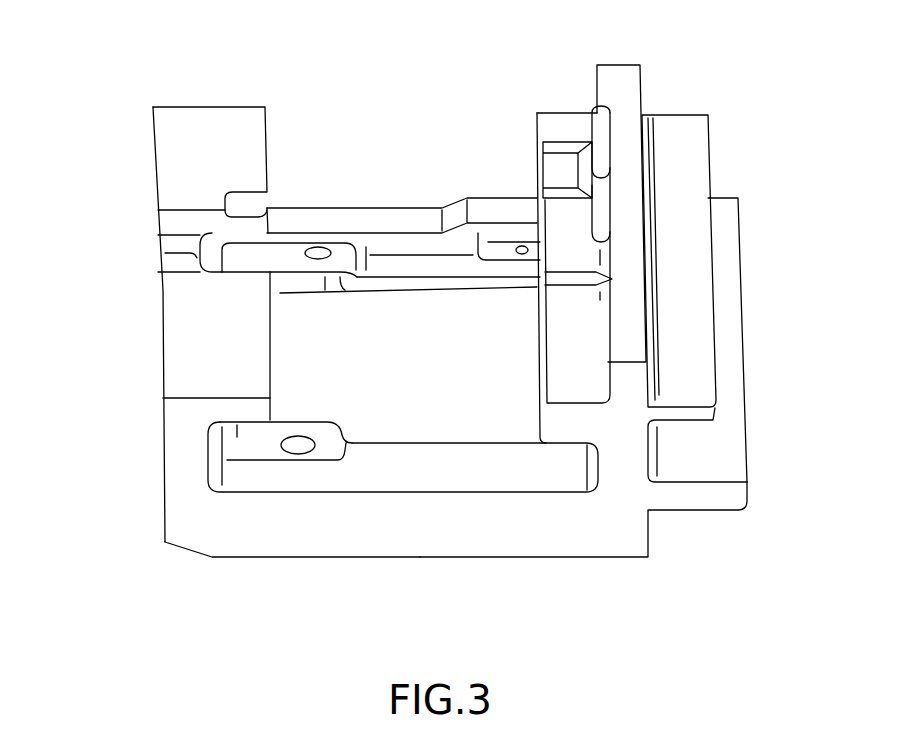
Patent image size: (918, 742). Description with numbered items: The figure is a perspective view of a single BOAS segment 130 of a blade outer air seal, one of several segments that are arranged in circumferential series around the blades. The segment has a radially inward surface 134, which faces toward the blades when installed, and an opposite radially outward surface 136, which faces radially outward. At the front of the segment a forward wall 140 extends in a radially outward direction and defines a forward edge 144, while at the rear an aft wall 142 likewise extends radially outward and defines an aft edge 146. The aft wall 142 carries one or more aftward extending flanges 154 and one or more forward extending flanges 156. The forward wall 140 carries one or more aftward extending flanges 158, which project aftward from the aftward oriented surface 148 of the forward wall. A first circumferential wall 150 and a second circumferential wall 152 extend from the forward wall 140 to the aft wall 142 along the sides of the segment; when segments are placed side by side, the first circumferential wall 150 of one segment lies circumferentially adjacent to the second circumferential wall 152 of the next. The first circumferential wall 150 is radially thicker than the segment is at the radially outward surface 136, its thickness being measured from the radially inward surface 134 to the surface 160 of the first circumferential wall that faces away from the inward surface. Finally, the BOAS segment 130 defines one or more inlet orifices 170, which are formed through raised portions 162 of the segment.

The BOAS segment 130 is at (160, 78).
The radially inward surface 134 is at (425, 572).
The radially outward surface 136 is at (413, 278).
The forward wall 140 is at (182, 422).
The aft wall 142 is at (617, 448).
The forward edge 144 is at (148, 479).
The aft edge 146 is at (655, 83).
The aftward oriented surface 148 is at (228, 448).
The first circumferential wall 150 is at (295, 507).
The second circumferential wall 152 is at (350, 196).
The aftward extending flange 154 is at (692, 288).
The forward extending flange 156 is at (570, 417).
The aftward extending flange 158 is at (242, 133).
The surface of first circumferential wall 160 is at (403, 457).
The raised portion 162 is at (263, 260).
The inlet orifice 170 is at (320, 228).